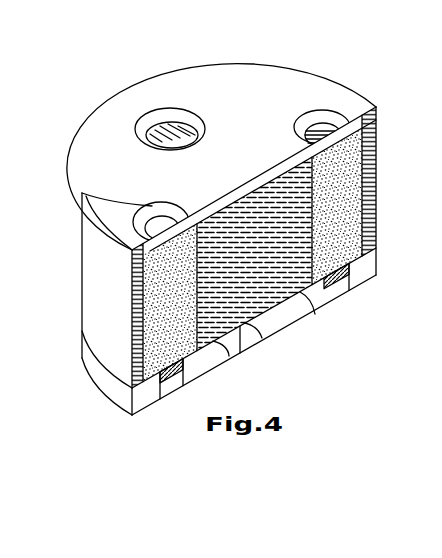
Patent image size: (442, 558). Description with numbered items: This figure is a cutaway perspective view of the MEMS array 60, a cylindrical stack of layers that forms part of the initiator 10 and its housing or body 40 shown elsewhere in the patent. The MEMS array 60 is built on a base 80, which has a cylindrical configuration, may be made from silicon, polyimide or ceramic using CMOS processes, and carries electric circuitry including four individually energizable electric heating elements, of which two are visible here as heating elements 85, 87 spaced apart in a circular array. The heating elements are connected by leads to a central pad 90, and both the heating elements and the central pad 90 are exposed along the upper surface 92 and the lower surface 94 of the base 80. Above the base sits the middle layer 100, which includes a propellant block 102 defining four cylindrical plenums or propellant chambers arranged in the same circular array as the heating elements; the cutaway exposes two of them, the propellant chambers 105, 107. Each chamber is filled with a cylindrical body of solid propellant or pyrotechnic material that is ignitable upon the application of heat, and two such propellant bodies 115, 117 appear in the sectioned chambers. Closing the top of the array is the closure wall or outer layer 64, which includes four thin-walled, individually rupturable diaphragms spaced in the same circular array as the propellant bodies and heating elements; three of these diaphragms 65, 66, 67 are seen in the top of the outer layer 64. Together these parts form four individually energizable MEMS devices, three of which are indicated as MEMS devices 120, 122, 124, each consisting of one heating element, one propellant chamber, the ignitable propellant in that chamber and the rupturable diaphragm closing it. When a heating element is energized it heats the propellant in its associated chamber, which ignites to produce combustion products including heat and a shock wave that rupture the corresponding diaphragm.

The assembly 10 is at (105, 495).
The housing 40 is at (116, 512).
The MEMS array 60 is at (167, 478).
The outer layer 64 is at (300, 105).
The diaphragm 65 is at (82, 193).
The diaphragm 66 is at (172, 128).
The diaphragm 67 is at (331, 128).
The base 80 is at (127, 418).
The electric heating element 85 is at (177, 375).
The electric heating element 87 is at (351, 287).
The central pad 90 is at (259, 329).
The upper surface 92 is at (234, 360).
The lower surface 94 is at (288, 329).
The middle layer 100 is at (78, 219).
The propellant block 102 is at (78, 289).
The propellant chamber 105 is at (131, 322).
The propellant chamber 107 is at (376, 186).
The propellant body 115 is at (132, 382).
The propellant body 117 is at (349, 165).
The MEMS device 120 is at (170, 199).
The MEMS device 122 is at (197, 99).
The MEMS device 124 is at (296, 136).